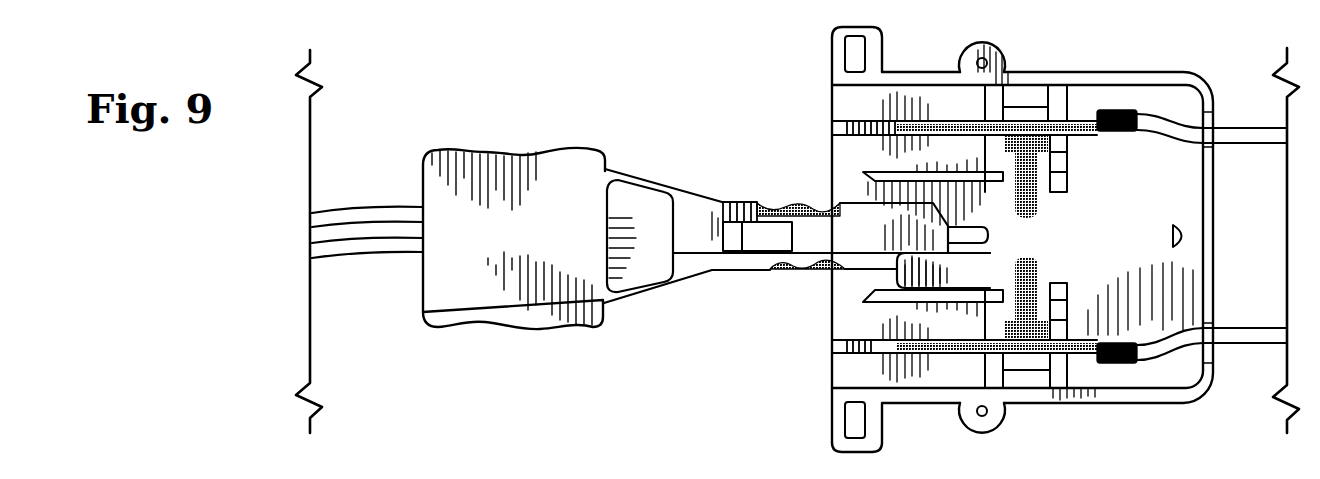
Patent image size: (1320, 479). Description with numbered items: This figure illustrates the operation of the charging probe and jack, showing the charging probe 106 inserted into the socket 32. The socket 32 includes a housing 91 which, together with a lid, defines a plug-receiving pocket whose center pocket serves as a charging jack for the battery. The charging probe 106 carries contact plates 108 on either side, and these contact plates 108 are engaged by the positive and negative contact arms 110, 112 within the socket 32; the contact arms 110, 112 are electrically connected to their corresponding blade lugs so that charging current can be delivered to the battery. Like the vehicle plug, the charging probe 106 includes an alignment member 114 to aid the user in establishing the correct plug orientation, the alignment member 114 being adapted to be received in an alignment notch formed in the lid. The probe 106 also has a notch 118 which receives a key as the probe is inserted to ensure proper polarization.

The socket 32 is at (1059, 236).
The housing 91 is at (1196, 73).
The charging probe 106 is at (528, 146).
The contact plates 108 is at (810, 202).
The positive contact arm 110 is at (1040, 208).
The negative contact arm 112 is at (1042, 270).
The alignment member 114 is at (634, 189).
The notch 118 is at (704, 268).